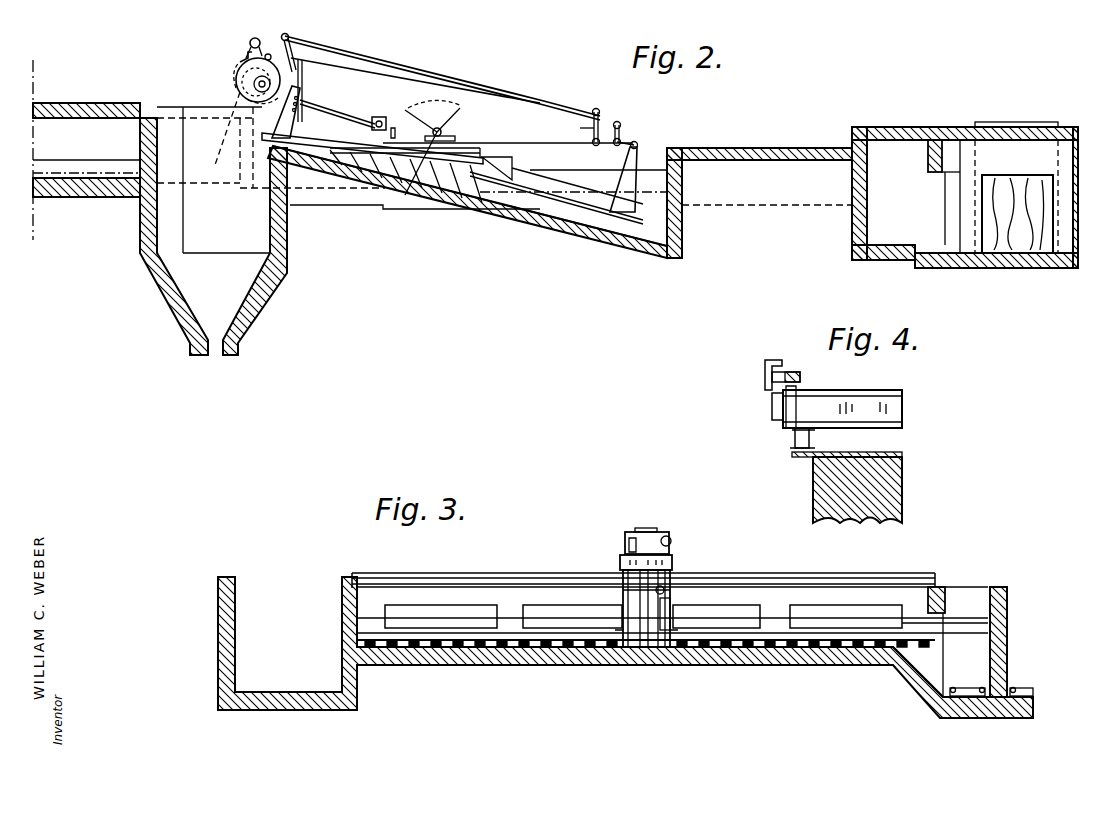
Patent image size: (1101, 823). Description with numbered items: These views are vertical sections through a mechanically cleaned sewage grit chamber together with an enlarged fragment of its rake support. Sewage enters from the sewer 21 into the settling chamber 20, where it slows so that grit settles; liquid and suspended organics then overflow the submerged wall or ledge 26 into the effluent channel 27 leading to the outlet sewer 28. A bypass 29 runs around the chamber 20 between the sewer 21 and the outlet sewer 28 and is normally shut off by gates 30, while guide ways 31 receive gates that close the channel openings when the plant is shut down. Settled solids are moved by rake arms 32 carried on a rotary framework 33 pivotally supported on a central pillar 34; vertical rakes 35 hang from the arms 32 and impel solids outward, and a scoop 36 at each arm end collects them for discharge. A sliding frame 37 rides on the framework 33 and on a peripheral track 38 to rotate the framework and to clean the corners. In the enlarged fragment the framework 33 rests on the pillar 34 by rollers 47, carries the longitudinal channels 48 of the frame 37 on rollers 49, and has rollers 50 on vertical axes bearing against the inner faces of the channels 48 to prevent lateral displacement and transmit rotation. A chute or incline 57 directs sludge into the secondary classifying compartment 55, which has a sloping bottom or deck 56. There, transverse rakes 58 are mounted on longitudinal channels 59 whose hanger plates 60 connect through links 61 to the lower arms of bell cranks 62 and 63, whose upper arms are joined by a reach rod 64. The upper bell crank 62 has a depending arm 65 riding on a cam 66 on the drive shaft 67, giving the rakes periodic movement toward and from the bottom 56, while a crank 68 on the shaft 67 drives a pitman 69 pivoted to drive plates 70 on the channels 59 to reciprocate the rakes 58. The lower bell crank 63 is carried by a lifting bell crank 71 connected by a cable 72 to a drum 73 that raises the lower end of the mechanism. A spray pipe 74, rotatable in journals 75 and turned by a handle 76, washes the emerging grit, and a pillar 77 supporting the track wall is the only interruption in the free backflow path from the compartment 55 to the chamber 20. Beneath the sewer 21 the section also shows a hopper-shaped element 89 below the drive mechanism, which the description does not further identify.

In FIG. 3, the settling chamber 20 is at (672, 596).
In FIG. 2, the sewer 21 is at (86, 150).
In FIG. 2, the submerged wall or ledge 26 is at (965, 197).
In FIG. 2, the effluent channel 27 is at (926, 196).
In FIG. 2, the outlet sewer 28 is at (1016, 196).
In FIG. 3, the bypass 29 is at (625, 647).
In FIG. 2, the gates 30 is at (996, 116).
In FIG. 2, the guide ways 31 is at (922, 124).
In FIG. 3, the rake arms 32 is at (432, 628).
In FIG. 4, the rotary framework 33 is at (904, 410).
In FIG. 3, the rotary framework 33 is at (672, 596).
In FIG. 4, the pillar 34 is at (904, 482).
In FIG. 3, the pillar 34 is at (623, 598).
In FIG. 3, the rakes 35 is at (512, 640).
In FIG. 3, the scoop 36 is at (370, 637).
In FIG. 3, the sliding frame 37 is at (625, 545).
In FIG. 3, the track 38 is at (516, 573).
In FIG. 4, the rollers 47 is at (795, 436).
In FIG. 4, the longitudinal channels 48 is at (764, 374).
In FIG. 3, the longitudinal channels 48 is at (620, 562).
In FIG. 4, the rollers 49 is at (772, 406).
In FIG. 4, the rollers 50 is at (792, 372).
In FIG. 2, the classifying compartment 55 is at (676, 148).
In FIG. 3, the classifying compartment 55 is at (952, 642).
In FIG. 2, the sloping bottom or deck 56 is at (632, 252).
In FIG. 3, the sloping bottom or deck 56 is at (1010, 718).
In FIG. 2, the chute or incline 57 is at (680, 180).
In FIG. 3, the chute or incline 57 is at (938, 684).
In FIG. 2, the transverse scraping blades or rakes 58 is at (503, 214).
In FIG. 3, the transverse scraping blades or rakes 58 is at (964, 688).
In FIG. 2, the longitudinal channels 59 is at (560, 228).
In FIG. 3, the longitudinal channels 59 is at (953, 688).
In FIG. 2, the hanger plates 60 is at (290, 122).
In FIG. 2, the links 61 is at (303, 80).
In FIG. 2, the upper bell crank 62 is at (289, 36).
In FIG. 2, the lower bell crank 63 is at (620, 126).
In FIG. 2, the reach rod 64 is at (396, 68).
In FIG. 2, the depending arm 65 is at (244, 62).
In FIG. 2, the cam 66 is at (236, 78).
In FIG. 2, the drive shaft 67 is at (246, 86).
In FIG. 2, the crank 68 is at (220, 128).
In FIG. 2, the pitman 69 is at (342, 144).
In FIG. 2, the drive plates 70 is at (386, 140).
In FIG. 2, the lifting bell crank 71 is at (573, 130).
In FIG. 2, the cable 72 is at (388, 76).
In FIG. 2, the drum 73 is at (252, 38).
In FIG. 2, the spray pipe 74 is at (442, 132).
In FIG. 2, the journals 75 is at (456, 138).
In FIG. 2, the handle 76 is at (430, 104).
In FIG. 2, the pillar 77 is at (540, 190).
In FIG. 2, the hopper 89 is at (262, 231).